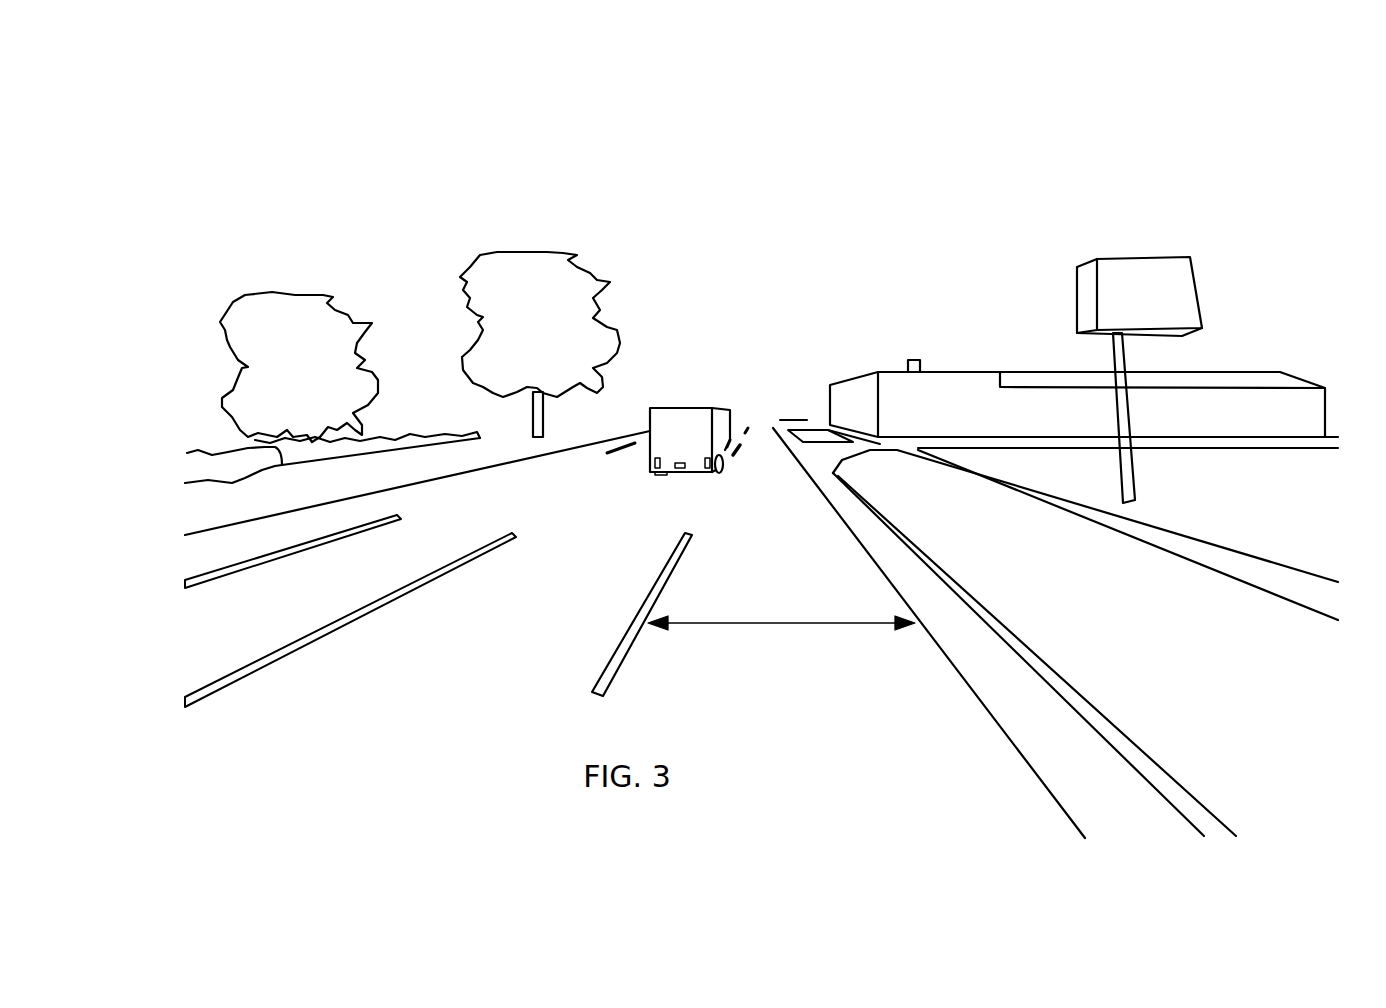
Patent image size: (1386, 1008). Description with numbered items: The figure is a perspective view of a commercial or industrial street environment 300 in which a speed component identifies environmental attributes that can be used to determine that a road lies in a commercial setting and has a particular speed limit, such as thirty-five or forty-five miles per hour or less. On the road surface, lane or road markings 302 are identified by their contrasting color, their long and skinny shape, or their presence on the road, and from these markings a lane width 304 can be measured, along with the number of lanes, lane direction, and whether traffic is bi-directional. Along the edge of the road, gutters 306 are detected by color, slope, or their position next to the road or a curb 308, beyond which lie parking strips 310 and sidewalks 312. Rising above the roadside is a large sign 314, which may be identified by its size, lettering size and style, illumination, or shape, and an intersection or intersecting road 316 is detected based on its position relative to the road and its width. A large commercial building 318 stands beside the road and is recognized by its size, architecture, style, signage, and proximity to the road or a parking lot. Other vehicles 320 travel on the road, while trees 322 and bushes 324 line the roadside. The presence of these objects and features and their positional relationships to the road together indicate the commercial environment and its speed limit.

The street environment 300 is at (978, 123).
The road markings 302 is at (688, 553).
The lane width 304 is at (781, 609).
The gutters 306 is at (963, 626).
The curbs 308 is at (1045, 670).
The parking strips 310 is at (953, 527).
The sidewalks 312 is at (1175, 535).
The large signs 314 is at (1145, 257).
The intersecting roads 316 is at (897, 447).
The building 318 is at (988, 372).
The vehicles 320 is at (680, 408).
The trees 322 is at (517, 252).
The bushes 324 is at (407, 430).